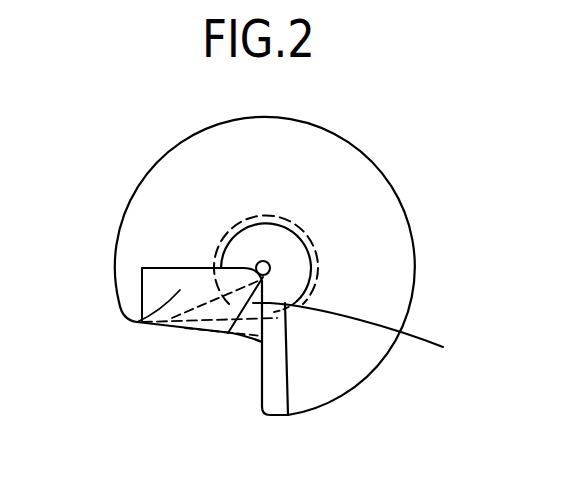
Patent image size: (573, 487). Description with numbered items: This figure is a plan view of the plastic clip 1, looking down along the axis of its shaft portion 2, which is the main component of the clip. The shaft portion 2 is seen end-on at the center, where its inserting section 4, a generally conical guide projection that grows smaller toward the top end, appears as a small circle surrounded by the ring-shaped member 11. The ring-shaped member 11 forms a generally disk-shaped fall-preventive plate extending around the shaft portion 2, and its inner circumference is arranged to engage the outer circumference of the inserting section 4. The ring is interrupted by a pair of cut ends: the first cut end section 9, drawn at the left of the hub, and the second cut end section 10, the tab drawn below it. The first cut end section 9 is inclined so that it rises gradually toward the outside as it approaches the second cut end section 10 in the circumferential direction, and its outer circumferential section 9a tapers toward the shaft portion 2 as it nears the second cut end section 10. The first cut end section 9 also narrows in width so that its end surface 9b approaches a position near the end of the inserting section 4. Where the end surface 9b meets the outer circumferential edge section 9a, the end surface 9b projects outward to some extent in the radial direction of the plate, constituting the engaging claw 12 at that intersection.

The plastic clip 1 is at (352, 108).
The shaft portion 2 is at (283, 245).
The inserting section 4 is at (283, 245).
The first cut end section 9 is at (137, 322).
The outer circumferential section 9a is at (173, 330).
The end surface 9b is at (370, 332).
The second cut end section 10 is at (297, 383).
The ring-shaped member 11 is at (400, 253).
The engaging claw 12 is at (250, 343).